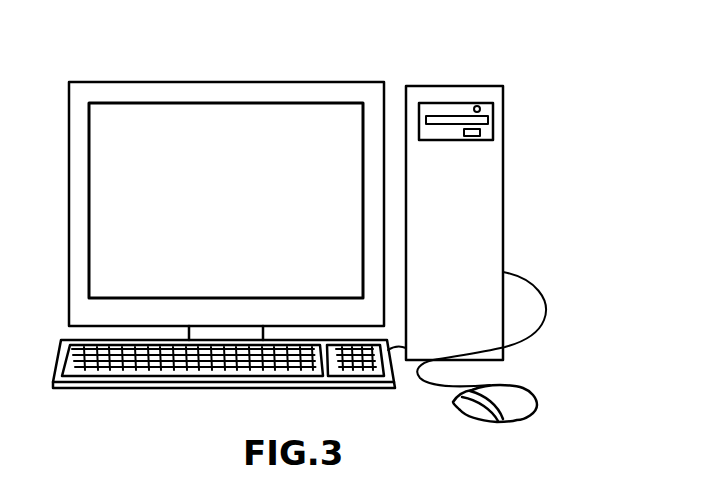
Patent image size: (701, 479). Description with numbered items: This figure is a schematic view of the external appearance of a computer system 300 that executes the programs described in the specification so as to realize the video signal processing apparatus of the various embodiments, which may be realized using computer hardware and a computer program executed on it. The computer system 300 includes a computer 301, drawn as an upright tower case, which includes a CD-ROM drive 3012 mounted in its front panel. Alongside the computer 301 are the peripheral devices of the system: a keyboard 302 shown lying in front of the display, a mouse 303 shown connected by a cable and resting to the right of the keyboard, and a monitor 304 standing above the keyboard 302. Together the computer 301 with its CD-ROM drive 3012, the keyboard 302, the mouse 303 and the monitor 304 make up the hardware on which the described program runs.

The computer system 300 is at (557, 64).
The computer 301 is at (449, 86).
The CD-ROM drive 3012 is at (495, 122).
The keyboard 302 is at (87, 391).
The mouse 303 is at (524, 387).
The monitor 304 is at (277, 82).